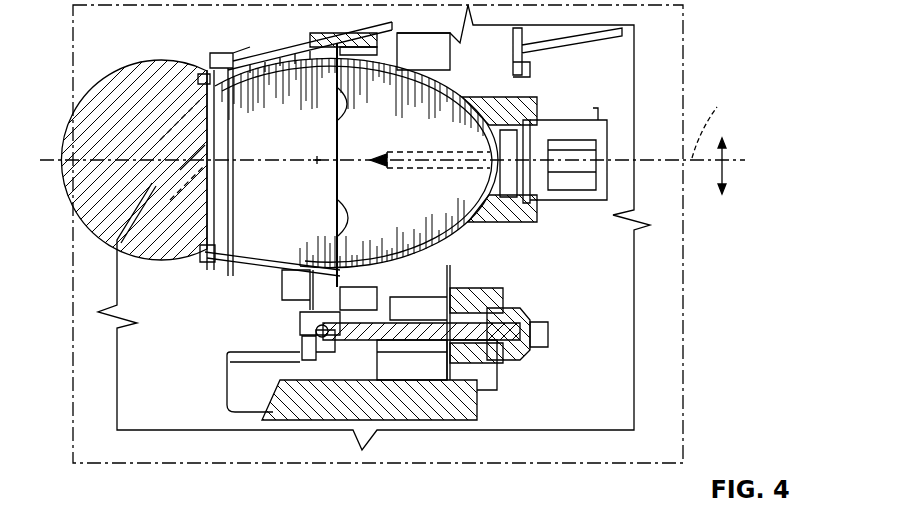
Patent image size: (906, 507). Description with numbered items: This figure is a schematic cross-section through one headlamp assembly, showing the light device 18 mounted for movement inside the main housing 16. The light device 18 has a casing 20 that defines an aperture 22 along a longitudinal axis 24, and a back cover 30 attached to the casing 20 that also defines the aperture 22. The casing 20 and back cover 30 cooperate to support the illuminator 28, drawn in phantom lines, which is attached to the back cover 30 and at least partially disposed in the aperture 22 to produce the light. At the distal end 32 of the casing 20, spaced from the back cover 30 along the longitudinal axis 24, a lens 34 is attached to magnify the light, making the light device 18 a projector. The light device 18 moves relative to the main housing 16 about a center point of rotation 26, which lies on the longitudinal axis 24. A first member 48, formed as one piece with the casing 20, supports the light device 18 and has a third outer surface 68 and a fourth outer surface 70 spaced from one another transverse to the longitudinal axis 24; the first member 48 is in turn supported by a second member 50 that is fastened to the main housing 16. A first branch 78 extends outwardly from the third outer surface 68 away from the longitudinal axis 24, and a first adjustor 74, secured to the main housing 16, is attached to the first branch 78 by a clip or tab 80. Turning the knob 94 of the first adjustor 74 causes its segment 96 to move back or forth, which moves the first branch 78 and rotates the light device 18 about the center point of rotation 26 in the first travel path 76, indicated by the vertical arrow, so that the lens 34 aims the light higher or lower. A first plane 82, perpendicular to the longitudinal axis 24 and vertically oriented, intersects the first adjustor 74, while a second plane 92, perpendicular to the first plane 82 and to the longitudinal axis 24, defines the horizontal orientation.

The main housing 16 is at (610, 280).
The light device 18 is at (200, 255).
The casing 20 is at (227, 254).
The aperture 22 is at (268, 112).
The longitudinal axis 24 is at (158, 136).
The center point of rotation 26 is at (317, 166).
The illuminator 28 is at (447, 186).
The back cover 30 is at (455, 86).
The distal end 32 is at (200, 78).
The lens 34 is at (183, 216).
The first member 48 is at (307, 55).
The second member 50 is at (293, 277).
The third outer surface 68 is at (300, 318).
The fourth outer surface 70 is at (357, 33).
The first adjustor 74 is at (500, 340).
The first travel path 76 is at (727, 164).
The first branch 78 is at (310, 357).
The clip or tab 80 is at (300, 343).
The first plane 82 is at (687, 315).
The second plane 92 is at (714, 118).
The knob 94 is at (533, 323).
The segment 96 is at (433, 340).